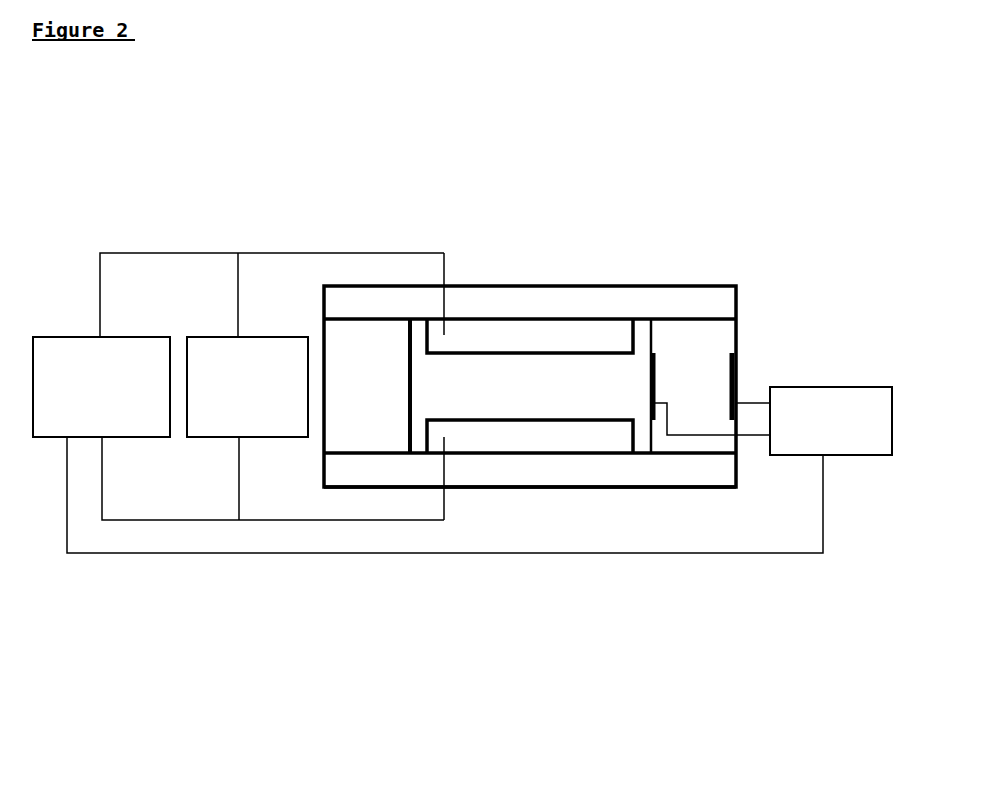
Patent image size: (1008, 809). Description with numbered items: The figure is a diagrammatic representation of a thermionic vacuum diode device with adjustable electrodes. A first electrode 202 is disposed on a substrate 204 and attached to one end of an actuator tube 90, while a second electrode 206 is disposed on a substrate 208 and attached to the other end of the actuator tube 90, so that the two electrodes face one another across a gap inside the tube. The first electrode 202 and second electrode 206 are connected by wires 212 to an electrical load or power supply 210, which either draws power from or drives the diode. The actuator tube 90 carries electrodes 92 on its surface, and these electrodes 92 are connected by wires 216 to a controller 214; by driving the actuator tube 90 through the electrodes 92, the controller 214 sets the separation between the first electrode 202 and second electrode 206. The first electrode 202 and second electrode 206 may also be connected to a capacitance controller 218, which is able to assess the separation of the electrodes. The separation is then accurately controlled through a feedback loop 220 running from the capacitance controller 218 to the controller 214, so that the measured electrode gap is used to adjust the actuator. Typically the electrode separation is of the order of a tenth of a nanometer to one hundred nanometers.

The actuator tube 90 is at (720, 320).
The electrodes 92 is at (787, 304).
The first electrode 202 is at (570, 262).
The substrate 204 is at (553, 312).
The second electrode 206 is at (530, 514).
The substrate 208 is at (530, 556).
The electrical load or power supply 210 is at (280, 304).
The wires 212 is at (296, 389).
The controller 214 is at (831, 339).
The wires 216 is at (764, 506).
The capacitance controller 218 is at (142, 304).
The feedback loop 220 is at (445, 580).